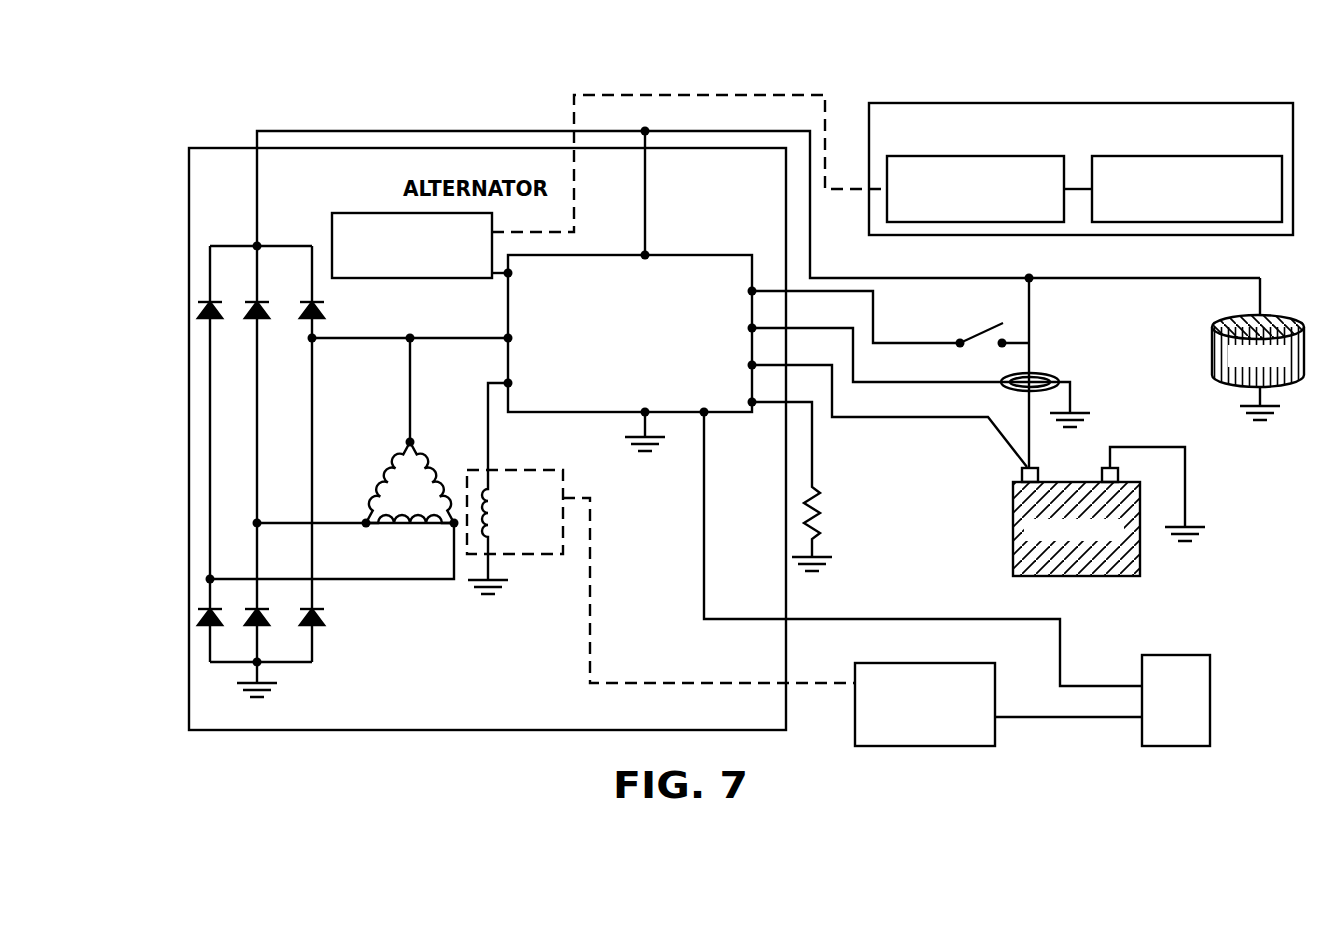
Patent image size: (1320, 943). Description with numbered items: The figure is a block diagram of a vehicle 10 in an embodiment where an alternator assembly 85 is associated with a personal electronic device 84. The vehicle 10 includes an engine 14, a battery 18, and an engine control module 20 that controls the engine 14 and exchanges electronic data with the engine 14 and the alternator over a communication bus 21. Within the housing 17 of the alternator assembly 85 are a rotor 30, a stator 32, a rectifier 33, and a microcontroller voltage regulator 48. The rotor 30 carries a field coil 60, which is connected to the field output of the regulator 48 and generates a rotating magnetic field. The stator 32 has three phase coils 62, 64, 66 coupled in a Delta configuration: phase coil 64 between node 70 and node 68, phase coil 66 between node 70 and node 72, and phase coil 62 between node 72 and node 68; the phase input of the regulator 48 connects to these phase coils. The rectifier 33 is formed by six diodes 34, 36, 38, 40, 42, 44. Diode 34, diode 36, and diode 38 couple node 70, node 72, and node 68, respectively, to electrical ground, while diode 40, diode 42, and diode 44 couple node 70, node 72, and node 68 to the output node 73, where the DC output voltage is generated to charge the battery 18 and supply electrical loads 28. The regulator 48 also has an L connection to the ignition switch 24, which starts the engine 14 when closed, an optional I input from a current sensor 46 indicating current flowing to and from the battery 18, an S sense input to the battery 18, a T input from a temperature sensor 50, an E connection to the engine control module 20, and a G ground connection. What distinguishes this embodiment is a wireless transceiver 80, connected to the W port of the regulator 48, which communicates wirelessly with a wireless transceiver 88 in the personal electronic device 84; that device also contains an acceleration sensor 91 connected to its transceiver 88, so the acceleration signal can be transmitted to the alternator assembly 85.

The vehicle 10 is at (231, 128).
The engine 14 is at (945, 747).
The housing 17 is at (264, 450).
The battery 18 is at (1082, 577).
The engine control module 20 is at (1178, 746).
The communication bus 21 is at (704, 558).
The ignition switch 24 is at (986, 331).
The electrical loads 28 is at (1232, 385).
The rotor 30 is at (521, 514).
The stator 32 is at (357, 460).
The rectifier 33 is at (216, 694).
The diode 34 is at (320, 611).
The diode 36 is at (263, 622).
The diode 38 is at (205, 612).
The diode 40 is at (320, 309).
The diode 42 is at (264, 312).
The diode 44 is at (204, 312).
The current sensor 46 is at (1038, 372).
The microcontroller voltage regulator 48 is at (603, 255).
The temperature sensor 50 is at (815, 512).
The field coil 60 is at (490, 497).
The phase coil 62 is at (396, 528).
The phase coil 64 is at (432, 483).
The phase coil 66 is at (383, 487).
The node 68 is at (451, 527).
The node 70 is at (413, 441).
The node 72 is at (364, 521).
The node 73 is at (282, 222).
The wireless transceiver 80 is at (382, 210).
The personal electronic device 84 is at (1081, 169).
The alternator assembly 85 is at (220, 188).
The wireless transceiver 88 is at (975, 222).
The acceleration sensor 91 is at (1232, 222).